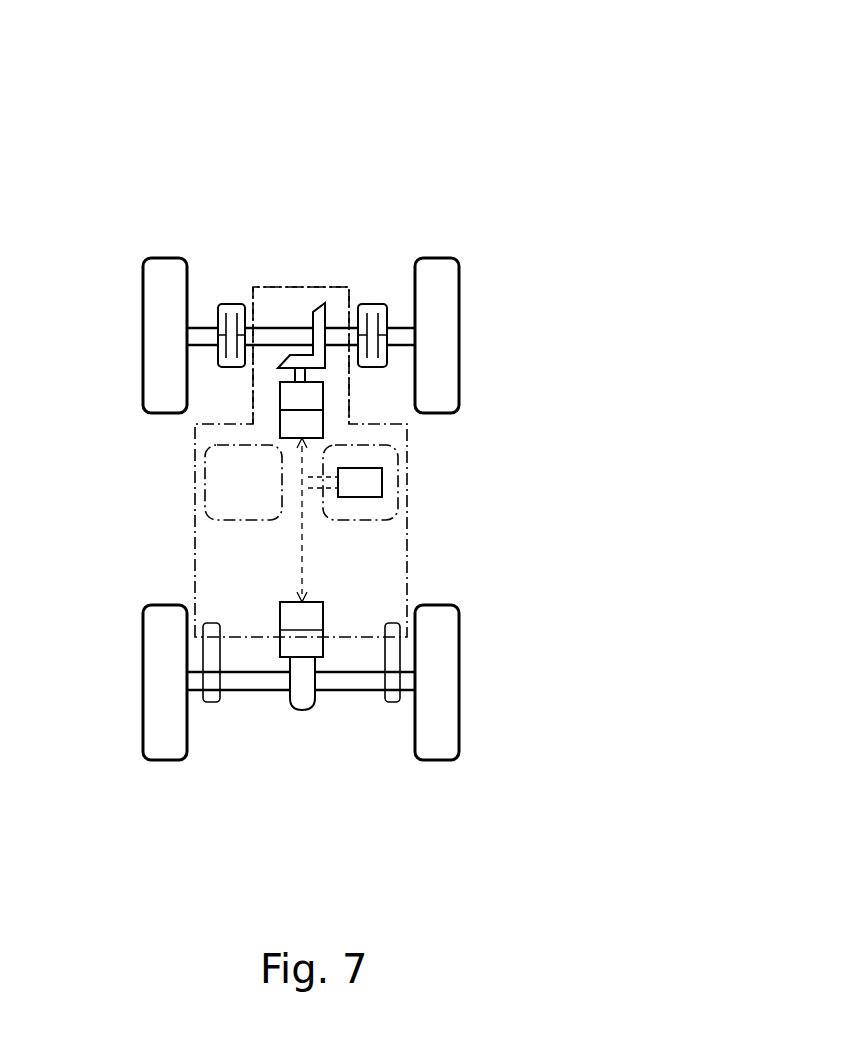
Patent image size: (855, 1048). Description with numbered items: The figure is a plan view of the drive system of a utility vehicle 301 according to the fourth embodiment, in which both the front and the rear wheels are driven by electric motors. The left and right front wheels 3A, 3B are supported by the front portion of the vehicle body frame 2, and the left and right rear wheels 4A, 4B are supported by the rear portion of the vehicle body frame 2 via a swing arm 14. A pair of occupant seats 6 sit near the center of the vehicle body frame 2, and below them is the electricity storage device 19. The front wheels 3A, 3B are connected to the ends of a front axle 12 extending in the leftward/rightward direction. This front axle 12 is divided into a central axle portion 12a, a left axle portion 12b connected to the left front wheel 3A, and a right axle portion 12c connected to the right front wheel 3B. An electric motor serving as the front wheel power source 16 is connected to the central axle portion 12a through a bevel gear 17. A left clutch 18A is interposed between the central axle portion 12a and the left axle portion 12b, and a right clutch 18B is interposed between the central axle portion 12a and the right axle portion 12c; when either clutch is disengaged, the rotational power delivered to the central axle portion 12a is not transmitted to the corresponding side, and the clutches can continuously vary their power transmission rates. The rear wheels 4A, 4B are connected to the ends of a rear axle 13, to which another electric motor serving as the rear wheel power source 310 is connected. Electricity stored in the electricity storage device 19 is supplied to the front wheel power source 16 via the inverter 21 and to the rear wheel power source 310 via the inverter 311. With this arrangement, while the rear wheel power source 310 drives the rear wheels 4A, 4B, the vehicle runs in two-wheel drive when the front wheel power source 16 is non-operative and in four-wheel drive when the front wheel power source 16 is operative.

The utility vehicle 301 is at (521, 127).
The vehicle body frame 2 is at (407, 552).
The left front wheel 3A is at (143, 290).
The right front wheel 3B is at (460, 290).
The left rear wheel 4A is at (143, 637).
The right rear wheel 4B is at (460, 637).
The occupant seats 6 is at (205, 497).
The front axle 12 is at (300, 241).
The central axle portion 12a is at (282, 325).
The left axle portion 12b is at (195, 325).
The right axle portion 12c is at (377, 266).
The rear axle 13 is at (360, 690).
The swing arm 14 is at (205, 660).
The front wheel power source 16 is at (323, 400).
The bevel gear 17 is at (322, 302).
The left clutch 18A is at (229, 304).
The right clutch 18B is at (372, 304).
The electricity storage device 19 is at (382, 470).
The inverter 21 is at (280, 418).
The rear wheel power source 310 is at (323, 647).
The inverter 311 is at (285, 615).